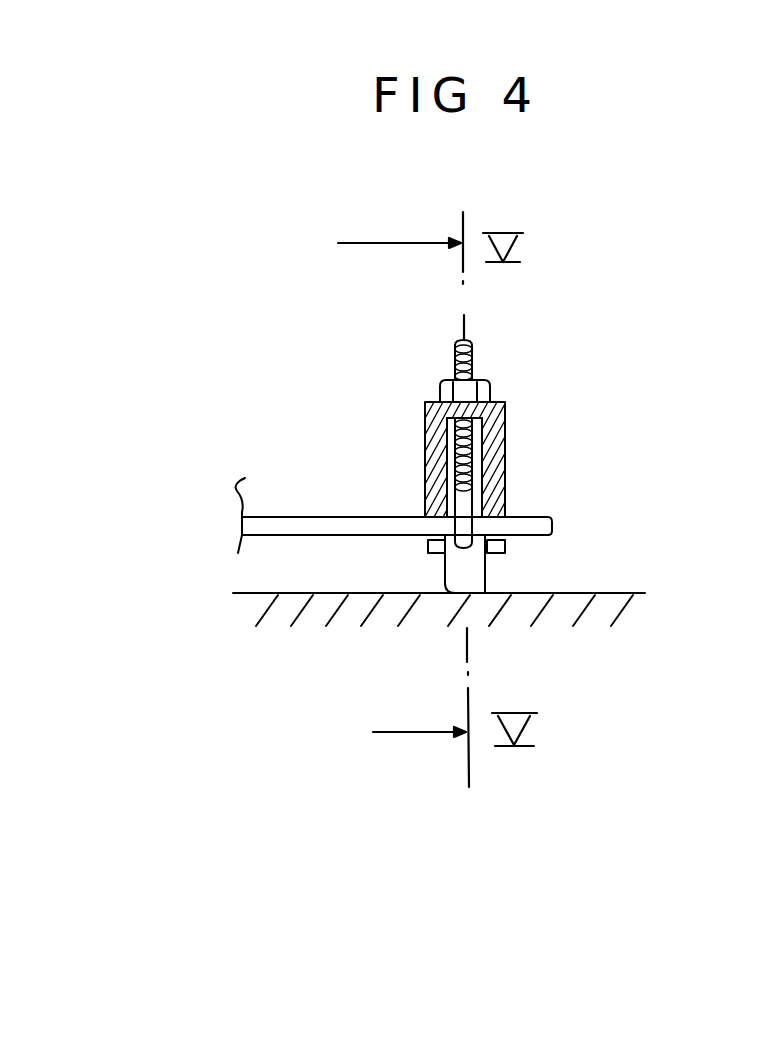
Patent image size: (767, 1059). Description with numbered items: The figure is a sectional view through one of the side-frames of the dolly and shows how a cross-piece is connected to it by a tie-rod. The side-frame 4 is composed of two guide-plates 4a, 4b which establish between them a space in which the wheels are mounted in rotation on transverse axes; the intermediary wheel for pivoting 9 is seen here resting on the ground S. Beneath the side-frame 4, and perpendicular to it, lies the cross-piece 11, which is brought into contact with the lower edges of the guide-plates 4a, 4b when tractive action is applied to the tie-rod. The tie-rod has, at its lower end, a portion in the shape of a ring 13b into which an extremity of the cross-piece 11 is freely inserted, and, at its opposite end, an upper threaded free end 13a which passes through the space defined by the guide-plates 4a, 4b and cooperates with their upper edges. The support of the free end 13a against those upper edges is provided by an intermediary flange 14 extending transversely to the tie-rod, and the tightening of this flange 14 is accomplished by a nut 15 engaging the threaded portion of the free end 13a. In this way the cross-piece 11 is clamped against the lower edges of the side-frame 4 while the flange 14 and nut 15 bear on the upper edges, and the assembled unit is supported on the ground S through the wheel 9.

The side-frame 4 is at (340, 330).
The guide-plate 4a is at (425, 465).
The guide-plate 4b is at (505, 470).
The intermediary wheel for pivoting 9 is at (466, 570).
The cross-piece 11 is at (300, 523).
The free end of tie-rod 13a is at (467, 347).
The ring-shaped portion of tie-rod 13b is at (482, 537).
The intermediary flange 14 is at (508, 403).
The nut 15 is at (494, 378).
The ground S is at (322, 607).